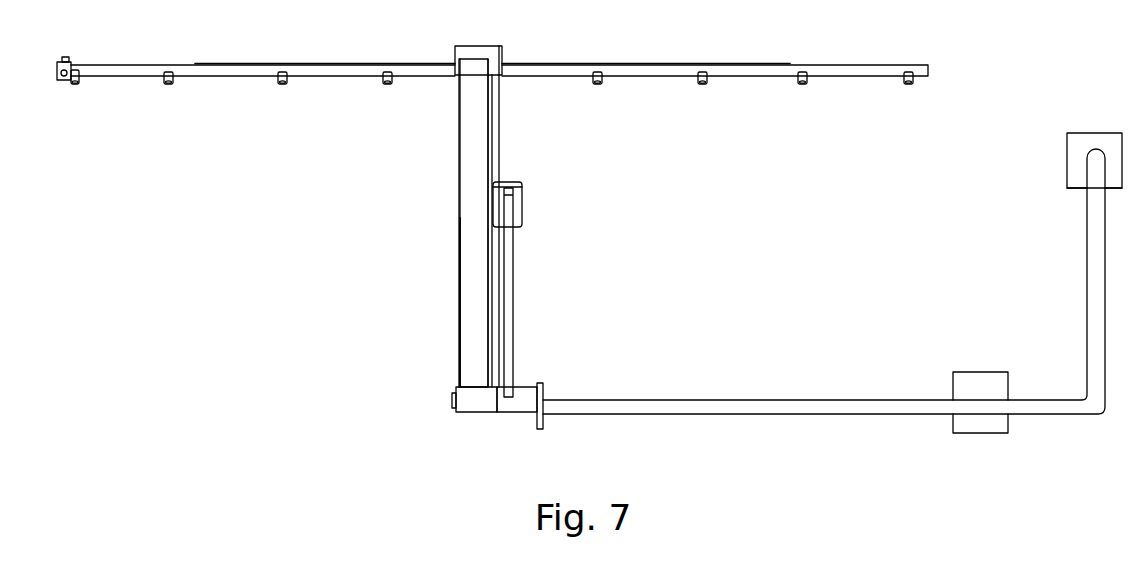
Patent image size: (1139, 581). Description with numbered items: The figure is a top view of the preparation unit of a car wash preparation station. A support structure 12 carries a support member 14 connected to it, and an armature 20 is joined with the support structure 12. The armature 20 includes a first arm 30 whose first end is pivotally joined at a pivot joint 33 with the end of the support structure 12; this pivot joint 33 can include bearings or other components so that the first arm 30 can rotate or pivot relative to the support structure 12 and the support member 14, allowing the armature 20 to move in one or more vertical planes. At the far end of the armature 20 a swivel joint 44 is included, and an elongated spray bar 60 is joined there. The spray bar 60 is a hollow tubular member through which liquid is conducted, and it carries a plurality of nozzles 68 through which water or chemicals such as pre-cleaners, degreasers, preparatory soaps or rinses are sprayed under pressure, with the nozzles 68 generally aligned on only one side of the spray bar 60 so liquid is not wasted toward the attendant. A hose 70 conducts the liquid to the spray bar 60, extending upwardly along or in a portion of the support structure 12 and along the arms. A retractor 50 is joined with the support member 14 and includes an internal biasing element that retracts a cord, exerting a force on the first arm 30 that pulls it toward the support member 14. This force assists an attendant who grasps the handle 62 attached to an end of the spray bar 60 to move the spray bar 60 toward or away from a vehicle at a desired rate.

The support structure 12 is at (650, 400).
The support member 14 is at (514, 288).
The armature 20 is at (436, 177).
The first arm 30 is at (475, 249).
The pivot joint 33 is at (453, 405).
The swivel joint 44 is at (455, 55).
The retractor 50 is at (522, 207).
The spray bar 60 is at (625, 72).
The handle 62 is at (65, 59).
The nozzles 68 is at (281, 86).
The hose 70 is at (500, 143).